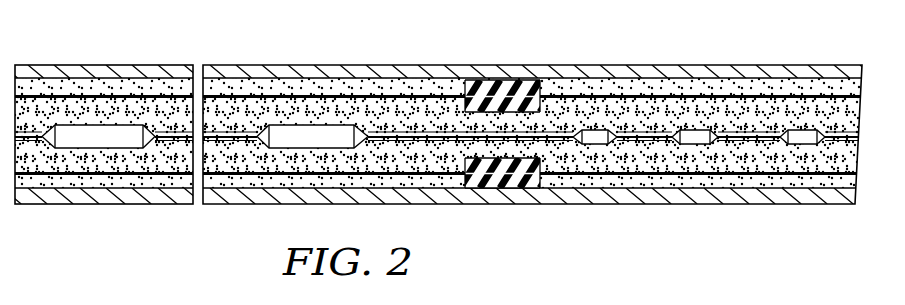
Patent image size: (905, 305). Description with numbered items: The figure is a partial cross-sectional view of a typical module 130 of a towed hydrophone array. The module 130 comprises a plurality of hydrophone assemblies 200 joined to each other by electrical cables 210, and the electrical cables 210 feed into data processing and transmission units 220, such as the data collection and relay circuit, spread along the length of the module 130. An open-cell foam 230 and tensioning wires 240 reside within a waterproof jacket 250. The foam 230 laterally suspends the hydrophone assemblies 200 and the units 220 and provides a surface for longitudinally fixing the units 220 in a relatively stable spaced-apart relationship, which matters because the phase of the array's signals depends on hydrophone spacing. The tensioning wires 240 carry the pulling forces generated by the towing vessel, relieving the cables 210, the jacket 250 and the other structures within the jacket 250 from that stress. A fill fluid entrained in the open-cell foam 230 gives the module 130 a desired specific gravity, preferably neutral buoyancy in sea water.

The module 130 is at (515, 221).
The hydrophone assembly 200 is at (592, 130).
The electrical cable 210 is at (644, 131).
The data processing and transmission unit 220 is at (97, 125).
The open-cell foam 230 is at (123, 102).
The tensioning wire 240 is at (333, 96).
The waterproof jacket 250 is at (176, 65).